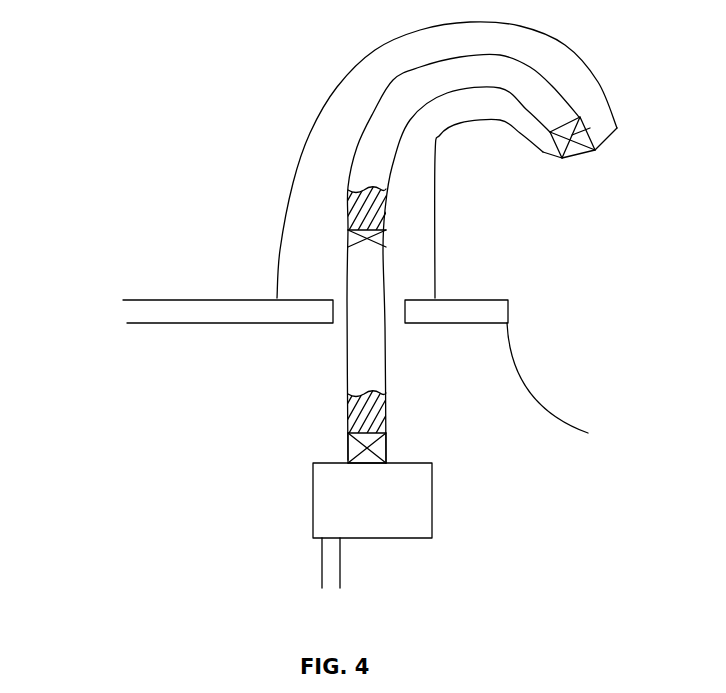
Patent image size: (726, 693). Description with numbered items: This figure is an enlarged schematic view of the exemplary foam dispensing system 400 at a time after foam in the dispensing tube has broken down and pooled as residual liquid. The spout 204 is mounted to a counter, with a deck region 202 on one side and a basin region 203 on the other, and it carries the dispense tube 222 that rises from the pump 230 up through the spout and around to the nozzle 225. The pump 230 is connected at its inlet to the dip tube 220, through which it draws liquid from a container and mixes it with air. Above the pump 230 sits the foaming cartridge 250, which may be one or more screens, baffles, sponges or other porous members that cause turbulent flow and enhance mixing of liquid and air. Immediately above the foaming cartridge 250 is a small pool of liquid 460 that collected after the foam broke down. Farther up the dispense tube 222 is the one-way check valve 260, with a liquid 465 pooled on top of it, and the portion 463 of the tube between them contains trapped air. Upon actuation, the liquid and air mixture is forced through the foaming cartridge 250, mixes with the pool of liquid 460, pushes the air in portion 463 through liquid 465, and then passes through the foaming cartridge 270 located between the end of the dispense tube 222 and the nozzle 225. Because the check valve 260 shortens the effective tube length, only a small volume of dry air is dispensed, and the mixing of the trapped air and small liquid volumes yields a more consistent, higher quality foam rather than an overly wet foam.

The foam dispensing system 400 is at (92, 229).
The spout 204 is at (355, 67).
The dispense tube 222 is at (385, 92).
The outlet 225 is at (580, 152).
The foaming cartridge 270 is at (590, 128).
The liquid 465 is at (377, 208).
The one-way check valve 260 is at (347, 232).
The portion 463 is at (367, 288).
The counter / mounting deck 202 is at (243, 298).
The sink basin 203 is at (525, 385).
The pool of liquid 460 is at (387, 393).
The foaming cartridge 250 is at (387, 443).
The pump 230 is at (430, 505).
The dip tube 220 is at (342, 570).